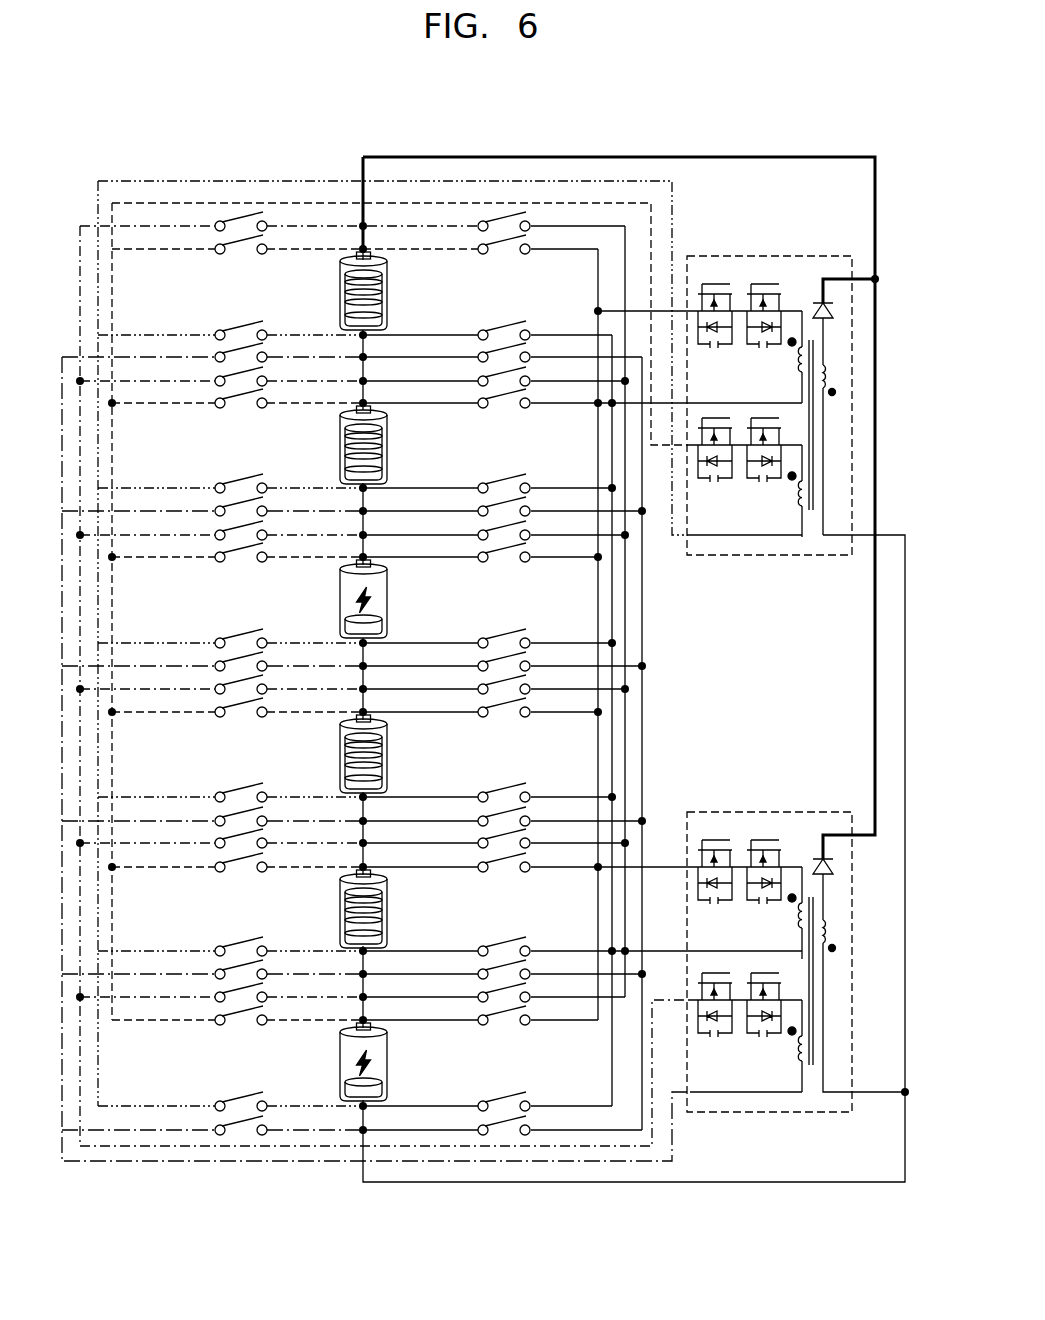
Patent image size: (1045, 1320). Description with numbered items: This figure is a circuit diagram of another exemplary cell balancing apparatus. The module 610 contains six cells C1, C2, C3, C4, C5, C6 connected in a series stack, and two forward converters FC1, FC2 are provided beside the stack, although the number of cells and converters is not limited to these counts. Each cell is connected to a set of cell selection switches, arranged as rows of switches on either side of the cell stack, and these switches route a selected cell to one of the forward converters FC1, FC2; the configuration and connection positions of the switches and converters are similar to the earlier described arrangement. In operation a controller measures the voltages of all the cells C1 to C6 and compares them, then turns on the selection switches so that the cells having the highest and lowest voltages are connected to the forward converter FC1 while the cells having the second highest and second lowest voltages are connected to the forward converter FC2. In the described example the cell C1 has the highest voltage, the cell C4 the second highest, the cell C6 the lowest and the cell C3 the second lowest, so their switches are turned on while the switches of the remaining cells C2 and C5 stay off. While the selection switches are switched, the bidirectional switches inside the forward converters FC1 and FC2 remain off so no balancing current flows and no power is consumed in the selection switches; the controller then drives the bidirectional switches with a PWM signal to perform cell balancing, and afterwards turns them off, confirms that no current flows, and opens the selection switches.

The module 610 is at (808, 126).
The cell C1 is at (378, 291).
The cell C2 is at (378, 445).
The cell C3 is at (378, 599).
The cell C4 is at (378, 754).
The cell C5 is at (378, 909).
The cell C6 is at (378, 1062).
The forward converter FC1 is at (769, 390).
The forward converter FC2 is at (796, 946).